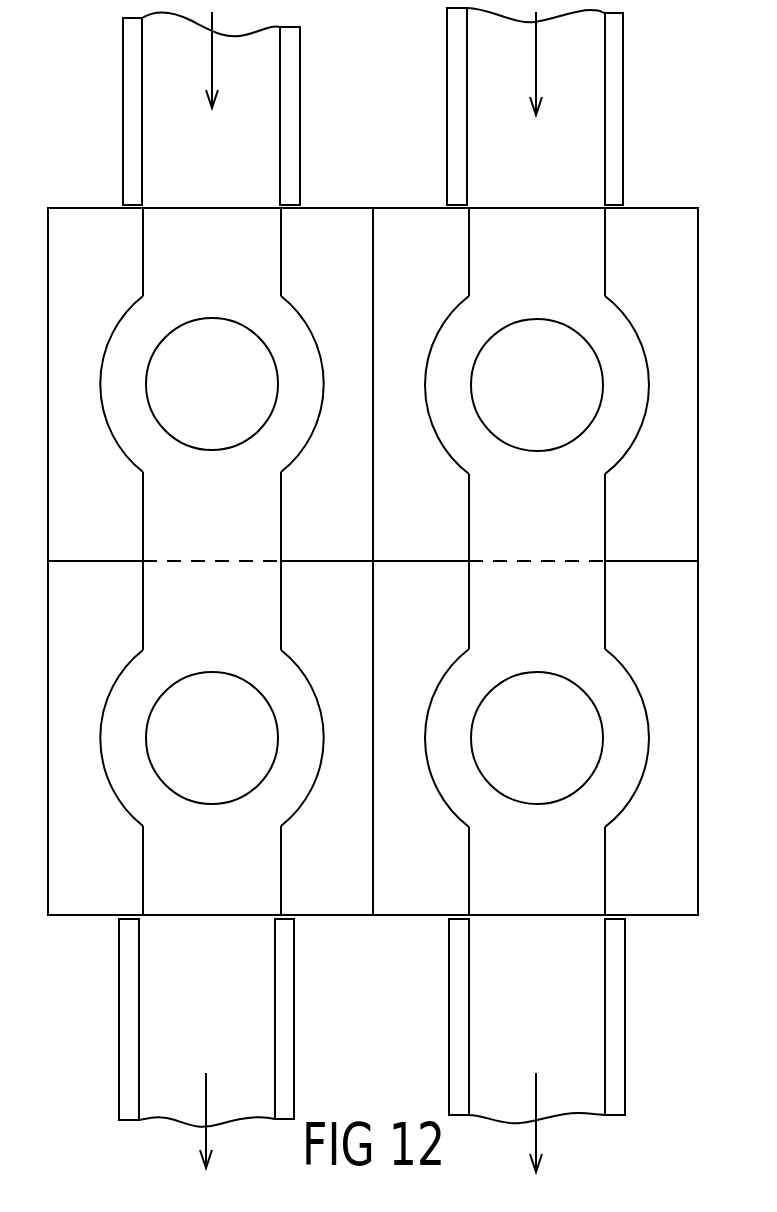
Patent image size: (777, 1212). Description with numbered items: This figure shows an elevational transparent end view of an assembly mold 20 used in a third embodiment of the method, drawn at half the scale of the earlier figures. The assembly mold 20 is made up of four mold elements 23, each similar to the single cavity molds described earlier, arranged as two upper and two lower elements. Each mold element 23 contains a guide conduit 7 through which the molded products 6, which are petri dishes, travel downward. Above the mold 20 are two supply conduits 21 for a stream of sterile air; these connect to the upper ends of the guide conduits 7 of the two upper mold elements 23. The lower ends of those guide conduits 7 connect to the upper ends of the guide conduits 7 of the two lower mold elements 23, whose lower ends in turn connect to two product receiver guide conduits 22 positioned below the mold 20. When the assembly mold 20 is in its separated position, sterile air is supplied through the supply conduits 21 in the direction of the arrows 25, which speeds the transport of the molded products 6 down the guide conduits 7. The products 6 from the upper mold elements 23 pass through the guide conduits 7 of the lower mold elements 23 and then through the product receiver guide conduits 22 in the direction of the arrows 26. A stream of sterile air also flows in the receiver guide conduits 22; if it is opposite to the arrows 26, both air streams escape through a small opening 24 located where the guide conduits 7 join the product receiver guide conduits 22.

The molded products 6 is at (374, 561).
The guide conduits 7 is at (374, 561).
The assembly mold 20 is at (375, 560).
The supply conduits 21 is at (288, 115).
The product receiver guide conduits 22 is at (285, 1043).
The mold elements 23 is at (373, 561).
The small opening 24 is at (118, 921).
The arrows 25 is at (396, 63).
The arrows 26 is at (391, 1122).